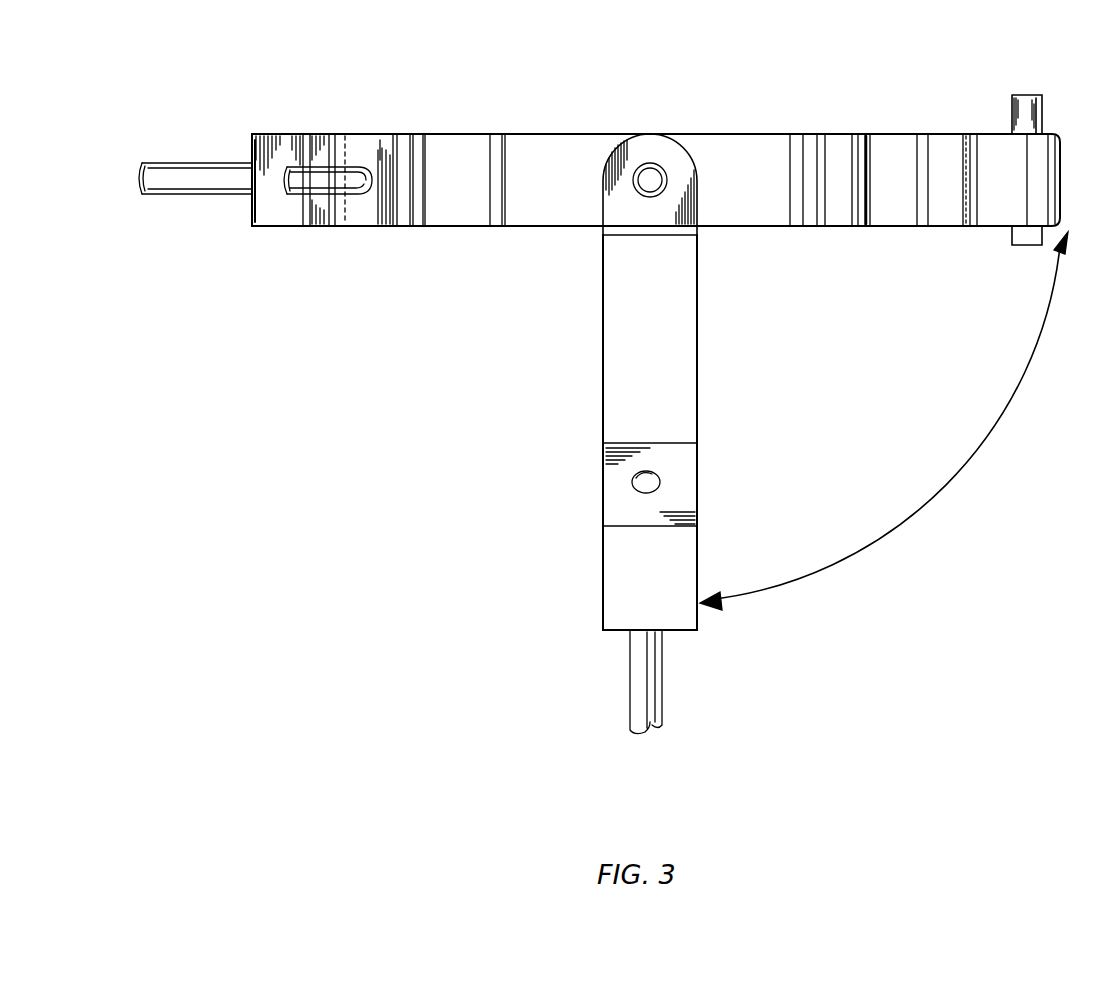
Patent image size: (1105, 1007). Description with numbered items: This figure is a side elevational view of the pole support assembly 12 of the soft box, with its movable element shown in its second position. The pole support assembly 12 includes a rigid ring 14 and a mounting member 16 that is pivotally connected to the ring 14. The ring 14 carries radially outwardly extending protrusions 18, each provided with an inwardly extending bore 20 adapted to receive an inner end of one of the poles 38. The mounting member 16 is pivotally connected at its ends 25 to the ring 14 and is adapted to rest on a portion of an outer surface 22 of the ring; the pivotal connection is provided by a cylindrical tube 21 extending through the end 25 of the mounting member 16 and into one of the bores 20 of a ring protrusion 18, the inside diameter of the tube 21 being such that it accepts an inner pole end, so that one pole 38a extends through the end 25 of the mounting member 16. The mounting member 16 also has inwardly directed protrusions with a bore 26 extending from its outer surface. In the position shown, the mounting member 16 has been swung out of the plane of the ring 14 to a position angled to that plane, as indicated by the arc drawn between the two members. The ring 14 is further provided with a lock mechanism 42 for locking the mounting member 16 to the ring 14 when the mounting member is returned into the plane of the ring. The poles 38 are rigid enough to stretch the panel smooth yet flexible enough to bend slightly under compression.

The pole support assembly 12 is at (356, 299).
The rigid ring 14 is at (403, 134).
The mounting member 16 is at (697, 478).
The protrusions 18 is at (350, 134).
The bore 20 is at (345, 226).
The cylindrical tube 21 is at (636, 194).
The outer surface 22 is at (250, 140).
The end 25 is at (637, 152).
The bore 26 is at (634, 482).
The pole 38 is at (188, 165).
The pole 38a is at (652, 176).
The lock mechanism 42 is at (1042, 110).